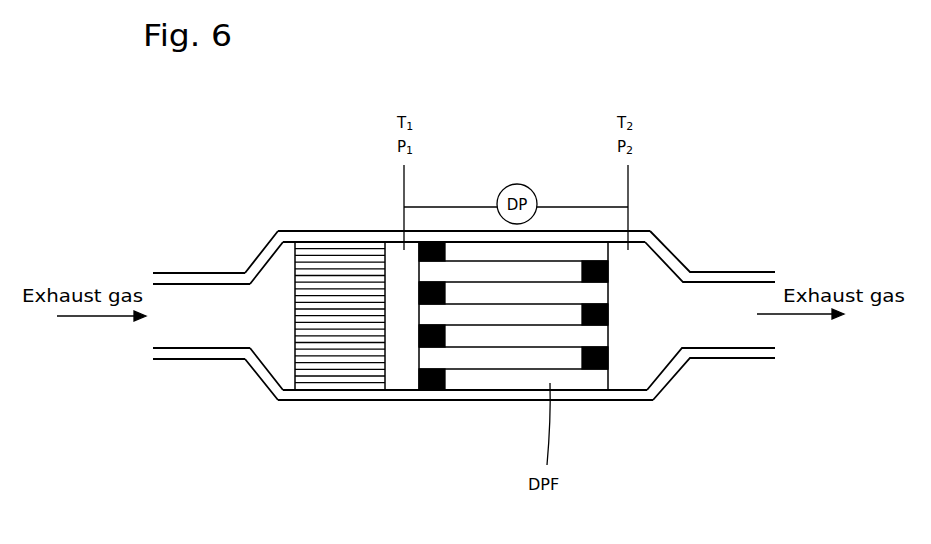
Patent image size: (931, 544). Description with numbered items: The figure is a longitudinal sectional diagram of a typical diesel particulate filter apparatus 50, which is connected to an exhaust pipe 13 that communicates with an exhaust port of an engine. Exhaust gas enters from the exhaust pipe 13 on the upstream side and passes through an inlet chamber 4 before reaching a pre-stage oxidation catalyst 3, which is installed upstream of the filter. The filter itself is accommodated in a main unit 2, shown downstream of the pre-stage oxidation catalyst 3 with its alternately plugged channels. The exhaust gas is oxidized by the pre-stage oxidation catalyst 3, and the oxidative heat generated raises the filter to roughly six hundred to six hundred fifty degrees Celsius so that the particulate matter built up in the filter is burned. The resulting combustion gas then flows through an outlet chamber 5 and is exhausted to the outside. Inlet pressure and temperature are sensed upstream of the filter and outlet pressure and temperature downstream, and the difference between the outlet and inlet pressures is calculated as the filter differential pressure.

The DPF main unit 2 is at (450, 393).
The pre-stage oxidation catalyst 3 is at (335, 377).
The inlet chamber 4 is at (265, 350).
The outlet chamber 5 is at (645, 267).
The exhaust pipe 13 is at (192, 328).
The DPF apparatus 50 is at (626, 399).